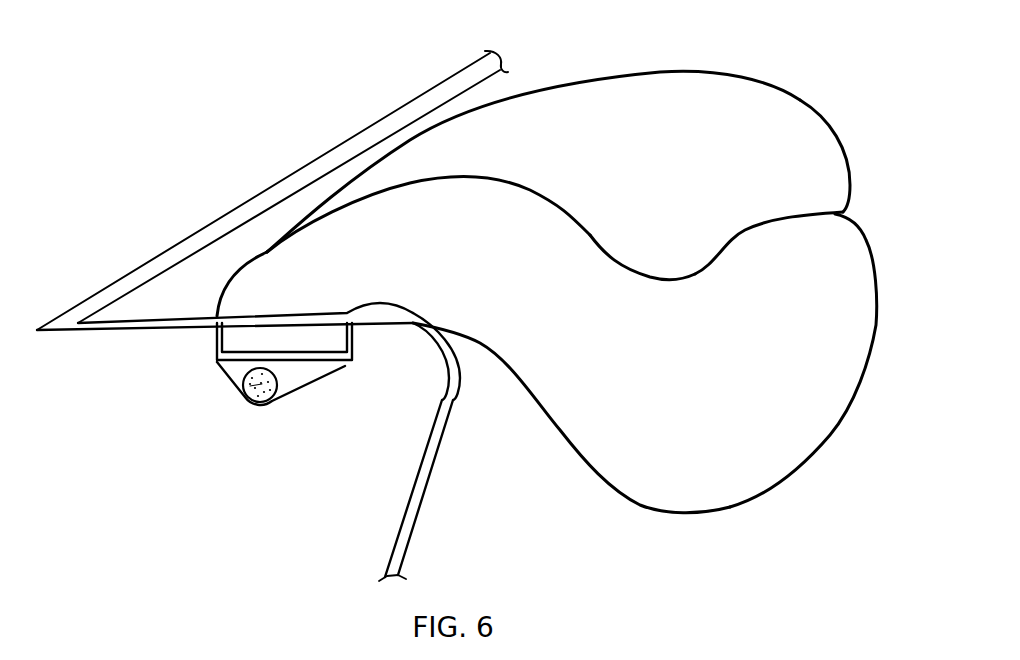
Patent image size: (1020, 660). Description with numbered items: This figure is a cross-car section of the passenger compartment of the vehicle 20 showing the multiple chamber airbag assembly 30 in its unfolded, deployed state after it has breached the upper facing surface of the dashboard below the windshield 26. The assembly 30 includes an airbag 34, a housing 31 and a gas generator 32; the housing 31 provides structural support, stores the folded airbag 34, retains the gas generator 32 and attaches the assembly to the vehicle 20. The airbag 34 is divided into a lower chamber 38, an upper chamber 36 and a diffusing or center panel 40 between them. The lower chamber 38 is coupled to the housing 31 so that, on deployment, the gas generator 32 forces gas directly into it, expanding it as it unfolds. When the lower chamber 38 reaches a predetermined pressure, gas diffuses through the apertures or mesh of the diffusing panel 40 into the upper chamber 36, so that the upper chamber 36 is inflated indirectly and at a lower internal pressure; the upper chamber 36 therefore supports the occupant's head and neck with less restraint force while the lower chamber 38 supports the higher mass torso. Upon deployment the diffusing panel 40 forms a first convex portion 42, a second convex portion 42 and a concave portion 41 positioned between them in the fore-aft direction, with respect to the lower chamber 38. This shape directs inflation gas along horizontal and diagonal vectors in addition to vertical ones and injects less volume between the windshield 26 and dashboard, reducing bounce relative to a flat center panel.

The vehicle 20 is at (212, 77).
The windshield 26 is at (162, 258).
The multiple chamber airbag assembly 30 is at (160, 406).
The housing 31 is at (297, 375).
The gas generator 32 is at (240, 393).
The airbag 34 is at (656, 534).
The upper chamber 36 is at (752, 100).
The lower chamber 38 is at (785, 463).
The diffusing panel 40 is at (778, 217).
The concave portion 41 is at (664, 243).
The convex portion 42 is at (486, 212).